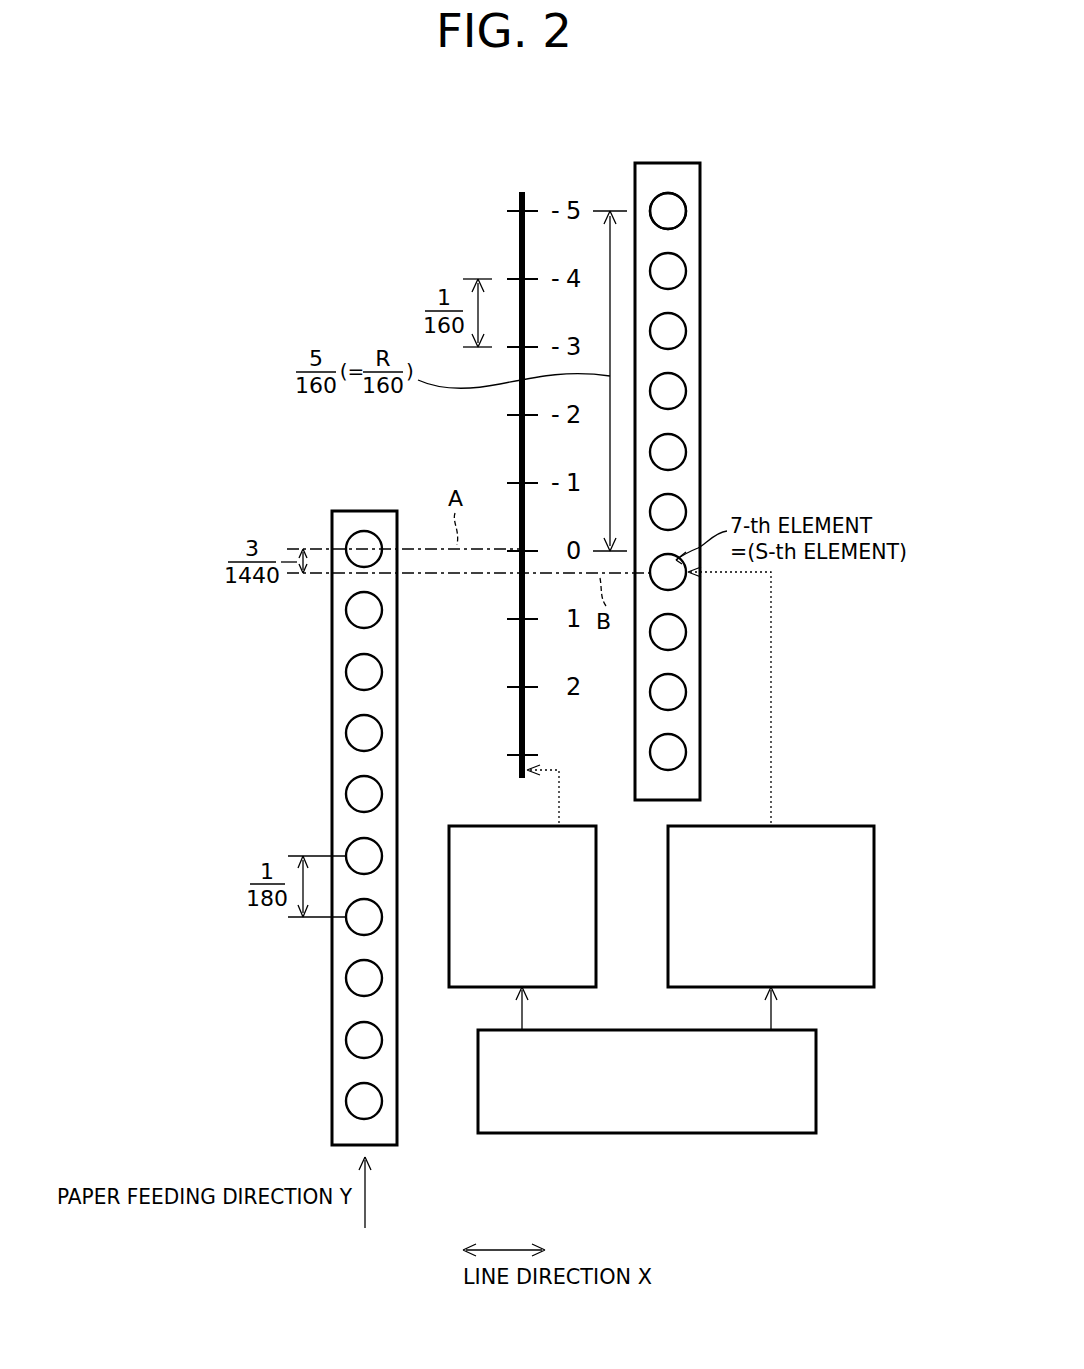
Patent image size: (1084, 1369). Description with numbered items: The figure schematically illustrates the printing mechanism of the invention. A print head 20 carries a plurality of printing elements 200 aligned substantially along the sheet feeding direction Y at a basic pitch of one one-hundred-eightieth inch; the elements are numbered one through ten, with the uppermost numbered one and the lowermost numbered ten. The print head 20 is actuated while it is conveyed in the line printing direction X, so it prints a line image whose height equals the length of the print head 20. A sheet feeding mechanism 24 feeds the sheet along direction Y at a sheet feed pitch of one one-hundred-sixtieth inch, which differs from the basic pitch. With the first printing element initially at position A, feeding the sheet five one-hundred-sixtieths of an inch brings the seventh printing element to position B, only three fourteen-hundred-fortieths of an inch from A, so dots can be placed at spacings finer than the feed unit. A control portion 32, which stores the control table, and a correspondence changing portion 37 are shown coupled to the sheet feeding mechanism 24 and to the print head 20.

The print head 20 is at (716, 157).
The printing elements 200 is at (686, 211).
The sheet feeding mechanism 24 is at (470, 826).
The correspondence changing portion 37 is at (877, 861).
The control portion 32 is at (818, 1055).